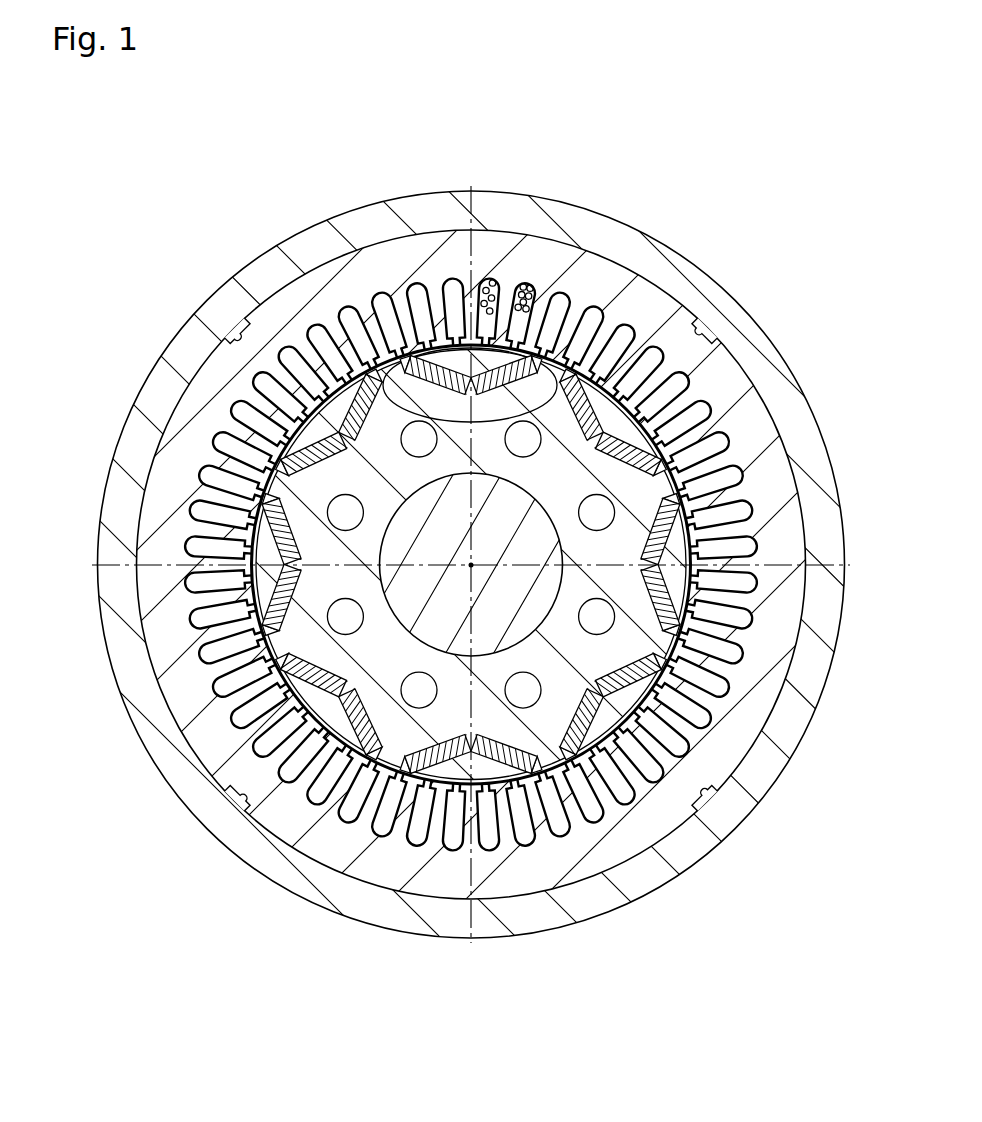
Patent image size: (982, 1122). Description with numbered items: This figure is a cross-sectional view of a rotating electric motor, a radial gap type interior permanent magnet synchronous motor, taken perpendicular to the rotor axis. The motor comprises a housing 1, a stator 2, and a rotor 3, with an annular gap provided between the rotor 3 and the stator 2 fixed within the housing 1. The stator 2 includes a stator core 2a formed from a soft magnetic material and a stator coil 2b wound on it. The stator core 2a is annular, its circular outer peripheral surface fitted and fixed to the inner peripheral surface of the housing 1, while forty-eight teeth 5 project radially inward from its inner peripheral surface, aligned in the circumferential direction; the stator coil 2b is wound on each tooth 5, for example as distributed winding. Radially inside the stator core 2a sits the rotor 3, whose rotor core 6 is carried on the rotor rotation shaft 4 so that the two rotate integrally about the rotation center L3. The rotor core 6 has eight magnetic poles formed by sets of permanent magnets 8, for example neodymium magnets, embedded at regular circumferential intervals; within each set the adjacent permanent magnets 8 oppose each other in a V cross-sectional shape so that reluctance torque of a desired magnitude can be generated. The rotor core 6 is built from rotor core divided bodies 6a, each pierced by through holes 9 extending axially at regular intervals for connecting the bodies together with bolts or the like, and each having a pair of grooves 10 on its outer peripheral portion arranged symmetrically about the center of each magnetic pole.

The housing 1 is at (256, 276).
The stator 2 is at (590, 122).
The stator core 2a is at (499, 286).
The stator coil 2b is at (657, 478).
The rotor 3 is at (531, 482).
The rotor rotation shaft 4 is at (430, 522).
The teeth 5 is at (380, 294).
The rotor core 6 is at (444, 572).
The rotor core divided body 6a is at (566, 486).
The permanent magnets 8 is at (590, 403).
The through holes 9 is at (590, 622).
The grooves 10 is at (541, 292).
The rotation center L3 is at (471, 565).